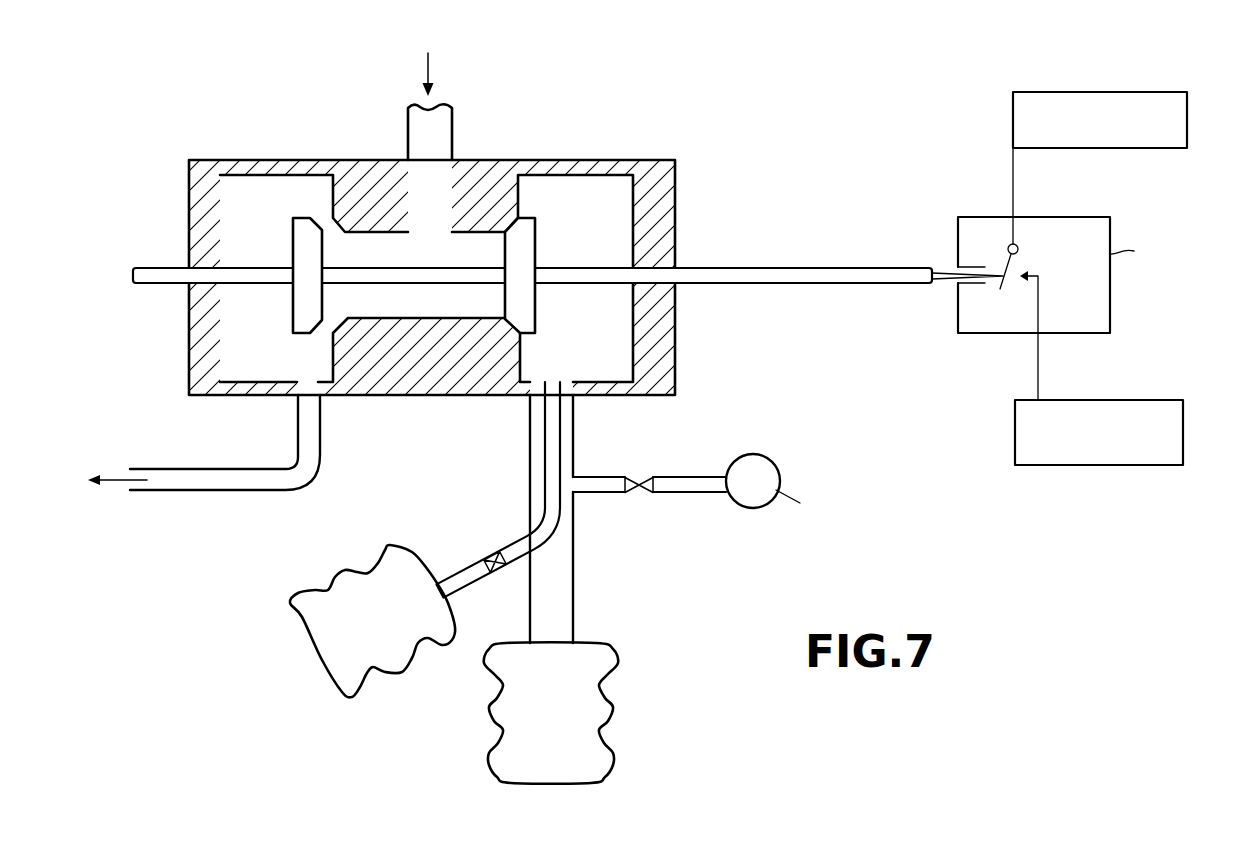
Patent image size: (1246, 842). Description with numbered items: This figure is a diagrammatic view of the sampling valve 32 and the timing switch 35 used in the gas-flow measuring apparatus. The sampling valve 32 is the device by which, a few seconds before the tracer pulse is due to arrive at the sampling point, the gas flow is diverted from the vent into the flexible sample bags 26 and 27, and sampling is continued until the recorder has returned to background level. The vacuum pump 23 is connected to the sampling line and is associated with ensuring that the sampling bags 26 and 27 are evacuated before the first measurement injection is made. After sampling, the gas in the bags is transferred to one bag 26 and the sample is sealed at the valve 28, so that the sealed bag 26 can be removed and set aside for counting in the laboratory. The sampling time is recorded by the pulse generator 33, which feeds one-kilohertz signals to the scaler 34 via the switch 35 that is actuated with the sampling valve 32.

The sampling valve 32 is at (556, 152).
The vacuum pump 23 is at (748, 470).
The flexible sample bag 26 is at (337, 573).
The flexible sample bag 27 is at (608, 672).
The valve 28 is at (478, 562).
The pulse generator 33 is at (1123, 138).
The scaler 34 is at (1122, 453).
The switch 35 is at (1060, 287).